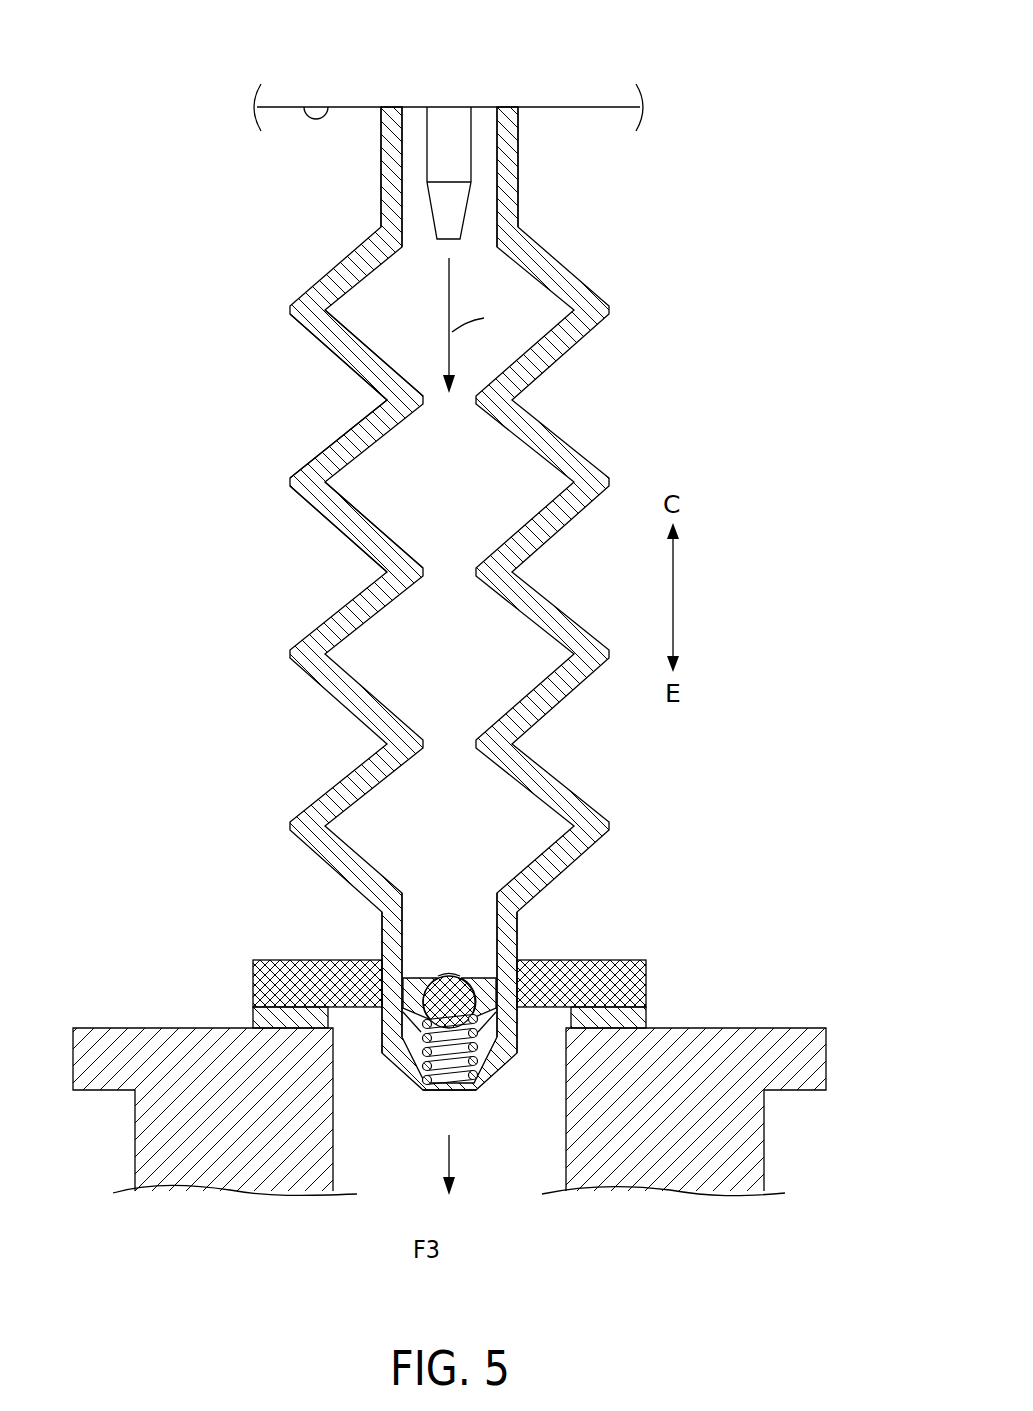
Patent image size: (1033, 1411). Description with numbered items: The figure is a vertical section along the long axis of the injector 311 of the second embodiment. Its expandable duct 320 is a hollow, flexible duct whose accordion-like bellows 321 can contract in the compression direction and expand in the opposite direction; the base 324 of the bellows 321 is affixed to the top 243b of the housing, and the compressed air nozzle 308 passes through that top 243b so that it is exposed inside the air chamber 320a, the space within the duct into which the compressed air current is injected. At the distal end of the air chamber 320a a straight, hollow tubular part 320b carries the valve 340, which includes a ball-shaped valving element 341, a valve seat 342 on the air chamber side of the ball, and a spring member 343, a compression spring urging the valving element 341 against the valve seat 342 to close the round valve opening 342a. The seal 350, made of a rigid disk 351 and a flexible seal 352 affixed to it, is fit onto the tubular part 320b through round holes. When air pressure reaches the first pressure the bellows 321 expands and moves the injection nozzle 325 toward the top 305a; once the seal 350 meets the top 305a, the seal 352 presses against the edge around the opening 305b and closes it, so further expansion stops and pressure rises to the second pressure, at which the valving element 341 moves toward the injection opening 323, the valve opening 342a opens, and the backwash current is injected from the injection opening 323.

The top 243b is at (303, 106).
The compressed air nozzle 308 is at (447, 133).
The injector 311 is at (355, 598).
The expandable duct 320 is at (327, 446).
The air chamber 320a is at (410, 510).
The tubular part 320b is at (519, 938).
The bellows 321 is at (321, 388).
The base 324 is at (361, 142).
The valve 340 is at (318, 967).
The valving element 341 is at (438, 975).
The valve seat 342 is at (414, 976).
The valve opening 342a is at (461, 964).
The spring member 343 is at (422, 1042).
The seal 350 is at (513, 958).
The disk 351 is at (613, 958).
The seal 352 is at (648, 1022).
The top 305a is at (103, 1028).
The opening 305b is at (378, 1112).
The injection opening 323 is at (438, 1110).
The injection nozzle 325 is at (502, 1140).